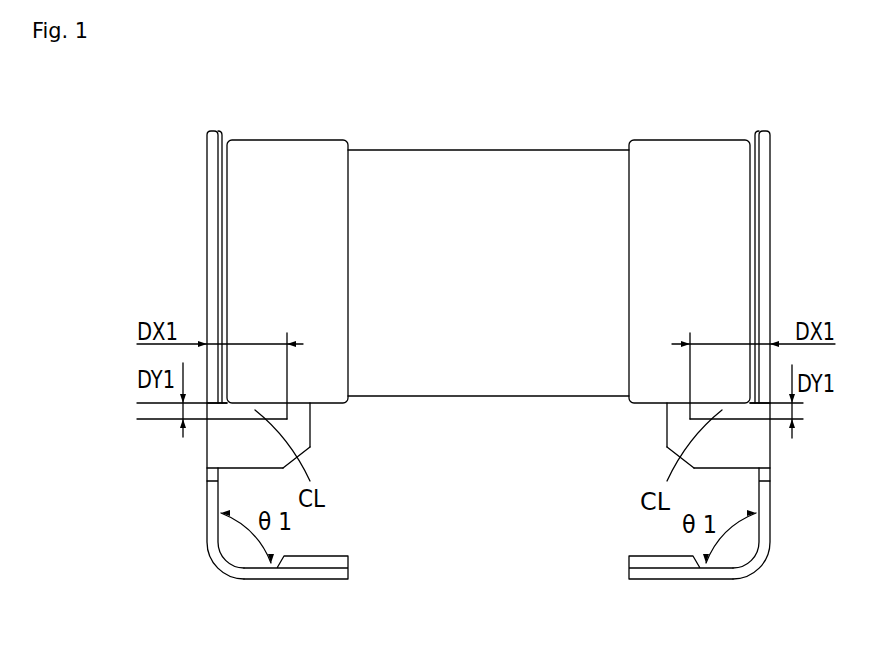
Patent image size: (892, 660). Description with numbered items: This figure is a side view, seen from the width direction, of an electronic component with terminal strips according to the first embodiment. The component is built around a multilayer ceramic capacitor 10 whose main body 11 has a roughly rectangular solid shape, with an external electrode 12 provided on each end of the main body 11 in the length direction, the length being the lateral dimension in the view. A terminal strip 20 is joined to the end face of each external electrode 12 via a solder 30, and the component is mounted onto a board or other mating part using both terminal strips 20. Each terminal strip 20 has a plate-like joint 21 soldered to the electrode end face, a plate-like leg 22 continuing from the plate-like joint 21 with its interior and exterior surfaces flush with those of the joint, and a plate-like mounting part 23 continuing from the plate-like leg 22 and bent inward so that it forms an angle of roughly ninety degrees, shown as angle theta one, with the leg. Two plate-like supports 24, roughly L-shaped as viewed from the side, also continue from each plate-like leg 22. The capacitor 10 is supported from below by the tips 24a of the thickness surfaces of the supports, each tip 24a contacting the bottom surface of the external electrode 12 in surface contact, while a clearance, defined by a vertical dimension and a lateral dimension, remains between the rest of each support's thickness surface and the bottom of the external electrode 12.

The multilayer ceramic capacitor 10 is at (488, 235).
The main body 11 is at (515, 167).
The external electrode 12 is at (291, 155).
The terminal strip 20 is at (488, 390).
The plate-like joint 21 is at (210, 268).
The plate-like leg 22 is at (207, 498).
The plate-like mounting part 23 is at (313, 580).
The plate-like support 24 is at (487, 438).
The tip 24a is at (301, 409).
The solder 30 is at (229, 139).